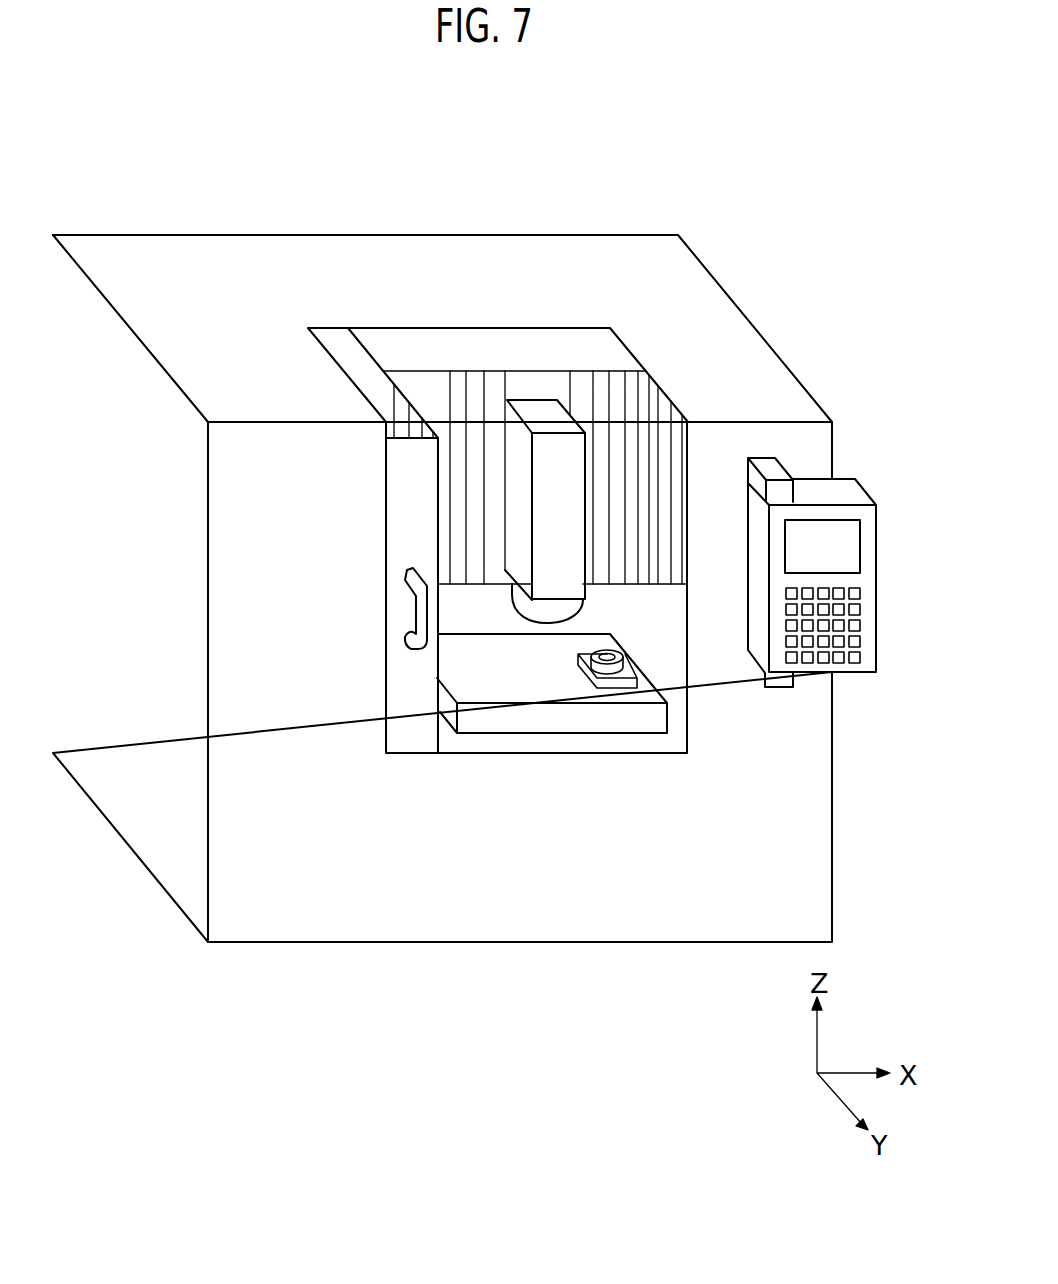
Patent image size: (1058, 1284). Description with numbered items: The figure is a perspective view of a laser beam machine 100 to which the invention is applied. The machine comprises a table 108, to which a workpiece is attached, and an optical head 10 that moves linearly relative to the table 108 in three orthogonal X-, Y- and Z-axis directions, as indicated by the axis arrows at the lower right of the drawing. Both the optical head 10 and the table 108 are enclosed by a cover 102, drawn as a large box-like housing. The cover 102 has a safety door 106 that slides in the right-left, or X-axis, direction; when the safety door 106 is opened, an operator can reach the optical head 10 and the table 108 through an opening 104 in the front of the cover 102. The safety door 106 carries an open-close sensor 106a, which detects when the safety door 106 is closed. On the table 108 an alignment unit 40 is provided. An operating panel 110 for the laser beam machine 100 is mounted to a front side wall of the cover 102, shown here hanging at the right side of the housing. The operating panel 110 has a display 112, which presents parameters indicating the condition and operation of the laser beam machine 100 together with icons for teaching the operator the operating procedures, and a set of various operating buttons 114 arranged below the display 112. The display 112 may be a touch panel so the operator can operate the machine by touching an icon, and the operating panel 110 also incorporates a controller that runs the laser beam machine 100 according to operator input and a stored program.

The laser beam machine 100 is at (630, 162).
The cover 102 is at (677, 282).
The opening 104 is at (683, 593).
The safety door 106 is at (403, 717).
The open-close sensor 106a is at (438, 616).
The optical head 10 is at (541, 412).
The table 108 is at (545, 717).
The alignment unit 40 is at (658, 664).
The operating panel 110 is at (868, 450).
The display 112 is at (843, 555).
The operating buttons 114 is at (840, 640).